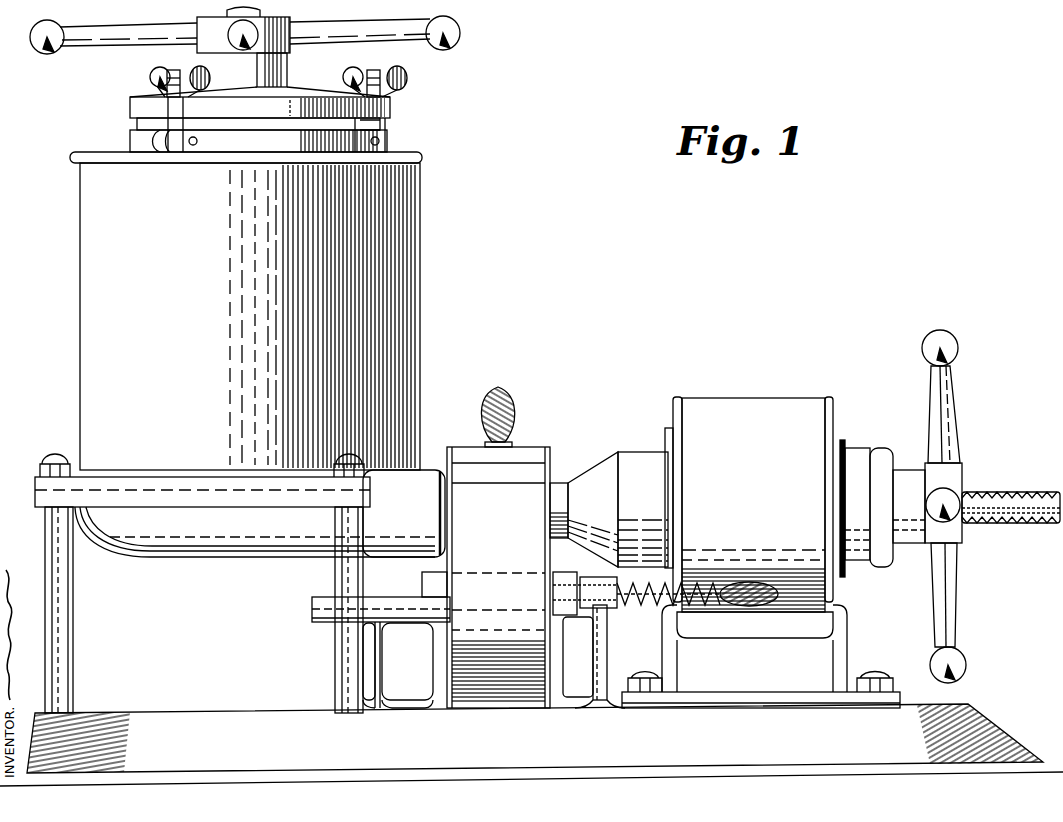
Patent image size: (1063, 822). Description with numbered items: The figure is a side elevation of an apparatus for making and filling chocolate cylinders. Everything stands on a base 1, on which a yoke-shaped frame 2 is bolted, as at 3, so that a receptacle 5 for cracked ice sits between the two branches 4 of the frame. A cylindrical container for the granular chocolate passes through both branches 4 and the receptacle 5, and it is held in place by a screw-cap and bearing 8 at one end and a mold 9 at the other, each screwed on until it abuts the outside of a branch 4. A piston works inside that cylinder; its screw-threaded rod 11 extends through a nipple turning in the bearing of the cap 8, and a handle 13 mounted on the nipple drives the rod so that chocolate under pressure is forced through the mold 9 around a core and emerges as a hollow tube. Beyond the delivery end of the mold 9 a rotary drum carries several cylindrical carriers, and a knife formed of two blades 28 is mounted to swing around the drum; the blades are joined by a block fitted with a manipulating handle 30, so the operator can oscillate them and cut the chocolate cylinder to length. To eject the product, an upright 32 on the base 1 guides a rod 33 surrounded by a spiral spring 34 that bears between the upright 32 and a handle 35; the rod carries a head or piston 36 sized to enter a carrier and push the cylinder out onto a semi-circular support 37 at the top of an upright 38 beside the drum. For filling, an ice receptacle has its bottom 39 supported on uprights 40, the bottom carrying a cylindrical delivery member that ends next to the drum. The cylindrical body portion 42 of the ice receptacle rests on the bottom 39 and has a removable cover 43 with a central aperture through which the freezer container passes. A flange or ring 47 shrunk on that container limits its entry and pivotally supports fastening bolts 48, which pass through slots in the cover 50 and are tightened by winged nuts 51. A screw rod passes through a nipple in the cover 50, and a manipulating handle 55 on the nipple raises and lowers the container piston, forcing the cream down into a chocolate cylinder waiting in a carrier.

The base 1 is at (165, 713).
The frame 2 is at (836, 650).
The bolts 3 is at (641, 678).
The branches 4 is at (668, 430).
The receptacle 5 is at (738, 416).
The screw-cap and bearing 8 is at (880, 455).
The mold 9 is at (640, 462).
The piston rod 11 is at (1021, 492).
The handle 13 is at (955, 418).
The knife blades 28 is at (550, 458).
The manipulating handle 30 is at (503, 390).
The upright 32 is at (598, 678).
The rod 33 is at (657, 607).
The spiral spring 34 is at (662, 607).
The handle 35 is at (768, 604).
The head or piston 36 is at (557, 582).
The semi-circular support or rest 37 is at (312, 606).
The upright 38 is at (375, 645).
The bottom of ice receptacle 39 is at (163, 558).
The uprights 40 is at (72, 638).
The cylindrical body portion 42 is at (403, 288).
The removable cover 43 is at (408, 158).
The flange or ring 47 is at (137, 141).
The fastening bolts 48 is at (380, 128).
The cover 50 is at (130, 107).
The winged nuts 51 is at (352, 77).
The manipulating handle 55 is at (110, 40).